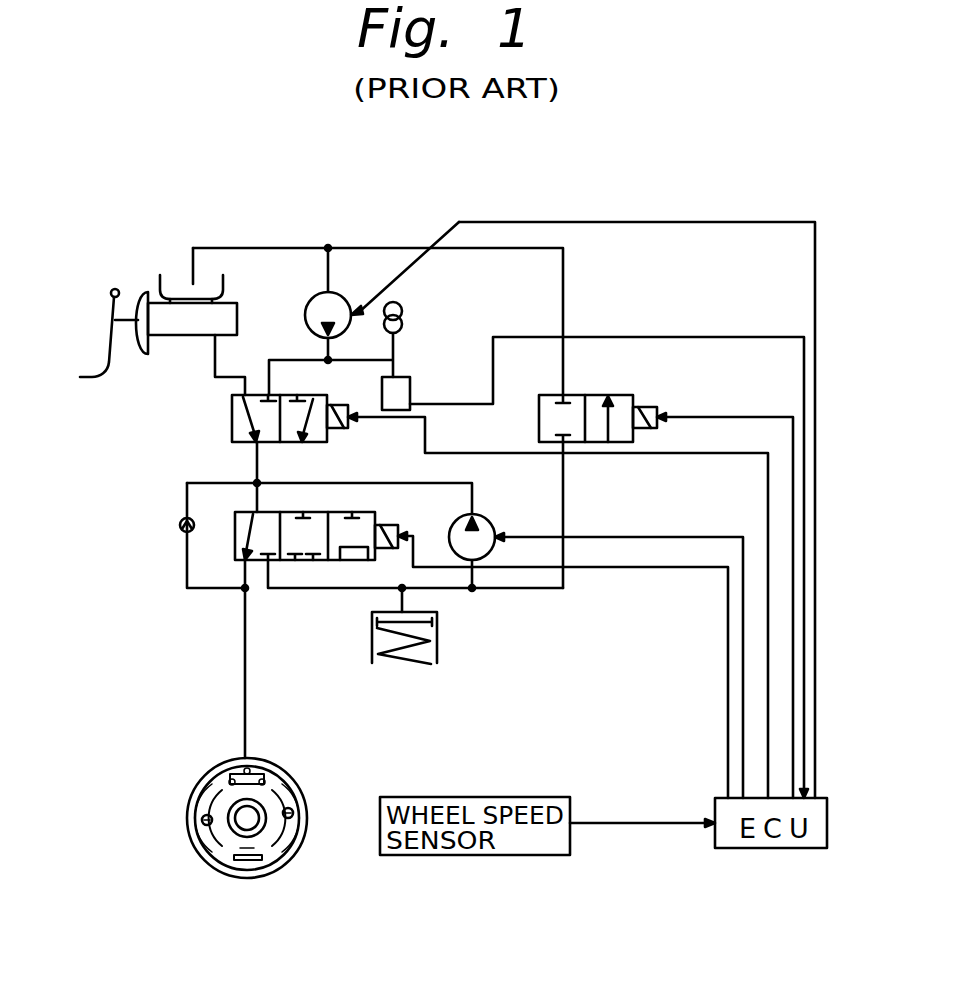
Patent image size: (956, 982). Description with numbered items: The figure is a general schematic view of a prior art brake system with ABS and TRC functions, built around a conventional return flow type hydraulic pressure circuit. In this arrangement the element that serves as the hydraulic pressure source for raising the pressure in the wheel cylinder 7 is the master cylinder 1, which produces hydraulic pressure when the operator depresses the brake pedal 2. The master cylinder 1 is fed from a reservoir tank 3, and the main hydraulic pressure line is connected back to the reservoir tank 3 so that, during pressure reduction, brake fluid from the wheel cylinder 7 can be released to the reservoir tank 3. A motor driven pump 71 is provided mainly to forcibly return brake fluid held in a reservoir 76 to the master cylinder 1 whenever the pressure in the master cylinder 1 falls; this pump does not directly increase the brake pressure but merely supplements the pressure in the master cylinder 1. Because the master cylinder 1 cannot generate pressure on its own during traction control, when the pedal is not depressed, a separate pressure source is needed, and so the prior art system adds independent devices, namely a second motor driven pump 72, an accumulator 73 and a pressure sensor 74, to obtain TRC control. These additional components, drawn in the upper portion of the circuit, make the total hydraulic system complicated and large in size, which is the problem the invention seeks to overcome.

The master cylinder 1 is at (234, 321).
The brake pedal 2 is at (86, 377).
The reservoir tank 3 is at (181, 286).
The wheel cylinder 7 is at (270, 786).
The motor driven pump 71 is at (486, 528).
The motor driven pump 72 is at (336, 302).
The accumulator 73 is at (403, 314).
The pressure sensor 74 is at (413, 393).
The reservoir 76 is at (437, 660).